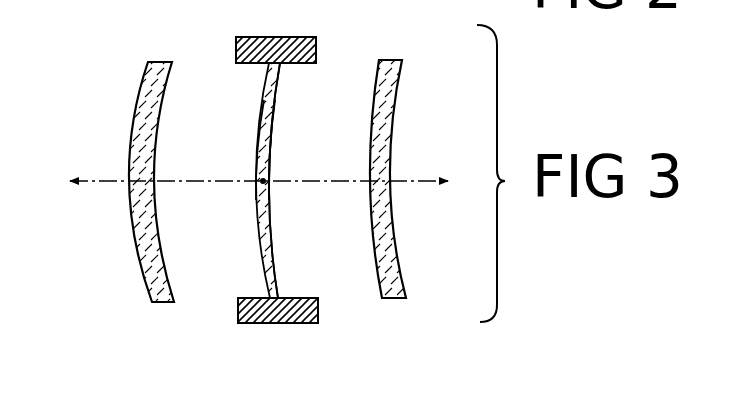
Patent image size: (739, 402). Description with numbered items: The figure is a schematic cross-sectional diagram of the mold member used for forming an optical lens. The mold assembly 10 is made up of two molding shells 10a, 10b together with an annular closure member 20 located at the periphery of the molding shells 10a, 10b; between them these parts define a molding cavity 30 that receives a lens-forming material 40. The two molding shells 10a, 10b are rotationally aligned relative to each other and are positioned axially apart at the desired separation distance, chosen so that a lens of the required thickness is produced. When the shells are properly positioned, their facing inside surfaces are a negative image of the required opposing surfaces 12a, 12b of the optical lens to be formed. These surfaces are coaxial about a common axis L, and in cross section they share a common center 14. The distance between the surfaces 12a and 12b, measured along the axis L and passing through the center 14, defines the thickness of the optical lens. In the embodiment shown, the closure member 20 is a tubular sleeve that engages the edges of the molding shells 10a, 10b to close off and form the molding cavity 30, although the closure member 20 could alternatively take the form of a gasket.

The mold assembly 10 is at (266, 161).
The molding shell 10a is at (140, 92).
The molding shell 10b is at (398, 88).
The opposing surface of the optical lens 12a is at (253, 208).
The opposing surface of the optical lens 12b is at (270, 208).
The common center 14 is at (262, 178).
The annular closure member 20 is at (302, 37).
The molding cavity 30 is at (260, 140).
The lens-forming material 40 is at (270, 122).
The common axis L is at (413, 178).